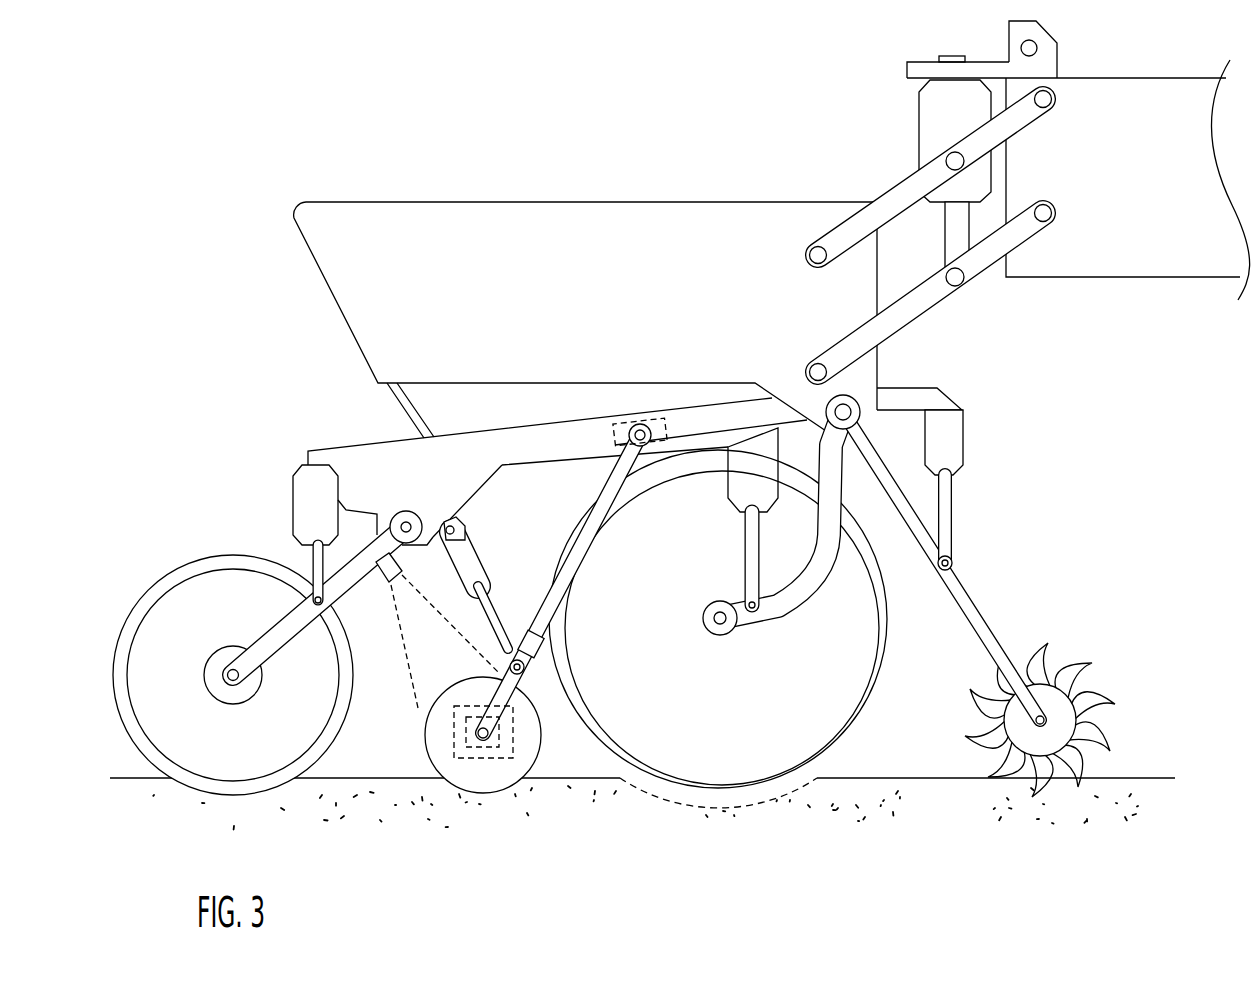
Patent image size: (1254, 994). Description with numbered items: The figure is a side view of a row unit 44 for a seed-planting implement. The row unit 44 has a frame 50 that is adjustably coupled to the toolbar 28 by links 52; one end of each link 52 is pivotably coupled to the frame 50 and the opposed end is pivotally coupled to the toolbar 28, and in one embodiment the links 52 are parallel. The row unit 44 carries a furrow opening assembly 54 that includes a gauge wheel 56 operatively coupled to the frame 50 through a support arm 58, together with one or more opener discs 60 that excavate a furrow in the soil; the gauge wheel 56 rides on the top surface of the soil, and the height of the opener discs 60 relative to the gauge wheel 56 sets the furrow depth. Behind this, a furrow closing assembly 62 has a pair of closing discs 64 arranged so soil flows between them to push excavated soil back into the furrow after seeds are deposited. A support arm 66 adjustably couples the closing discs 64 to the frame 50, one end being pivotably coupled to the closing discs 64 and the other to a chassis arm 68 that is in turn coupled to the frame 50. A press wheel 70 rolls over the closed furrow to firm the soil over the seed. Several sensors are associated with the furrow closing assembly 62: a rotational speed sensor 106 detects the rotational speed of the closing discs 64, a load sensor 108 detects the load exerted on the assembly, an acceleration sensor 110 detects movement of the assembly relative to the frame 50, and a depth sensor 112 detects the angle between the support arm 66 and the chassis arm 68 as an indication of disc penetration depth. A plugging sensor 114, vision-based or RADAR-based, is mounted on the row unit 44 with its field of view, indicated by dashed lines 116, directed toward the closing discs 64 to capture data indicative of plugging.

The toolbar 28 is at (1085, 277).
The row unit 44 is at (368, 112).
The frame 50 is at (633, 203).
The links 52 is at (1013, 140).
The furrow opening assembly 54 is at (888, 706).
The gauge wheel 56 is at (882, 578).
The support arm 58 is at (762, 618).
The opener discs 60 is at (652, 808).
The furrow closing assembly 62 is at (440, 790).
The closing discs 64 is at (426, 766).
The support arm 66 is at (590, 472).
The chassis arm 68 is at (349, 446).
The press wheel 70 is at (114, 652).
The rotational speed sensor 106 is at (486, 758).
The load sensor 108 is at (500, 733).
The acceleration sensor 110 is at (560, 670).
The depth sensor 112 is at (647, 418).
The plugging sensor 114 is at (410, 546).
The dashed lines 116 is at (480, 648).